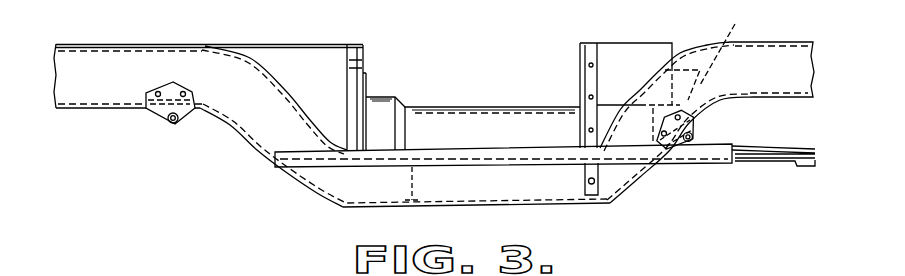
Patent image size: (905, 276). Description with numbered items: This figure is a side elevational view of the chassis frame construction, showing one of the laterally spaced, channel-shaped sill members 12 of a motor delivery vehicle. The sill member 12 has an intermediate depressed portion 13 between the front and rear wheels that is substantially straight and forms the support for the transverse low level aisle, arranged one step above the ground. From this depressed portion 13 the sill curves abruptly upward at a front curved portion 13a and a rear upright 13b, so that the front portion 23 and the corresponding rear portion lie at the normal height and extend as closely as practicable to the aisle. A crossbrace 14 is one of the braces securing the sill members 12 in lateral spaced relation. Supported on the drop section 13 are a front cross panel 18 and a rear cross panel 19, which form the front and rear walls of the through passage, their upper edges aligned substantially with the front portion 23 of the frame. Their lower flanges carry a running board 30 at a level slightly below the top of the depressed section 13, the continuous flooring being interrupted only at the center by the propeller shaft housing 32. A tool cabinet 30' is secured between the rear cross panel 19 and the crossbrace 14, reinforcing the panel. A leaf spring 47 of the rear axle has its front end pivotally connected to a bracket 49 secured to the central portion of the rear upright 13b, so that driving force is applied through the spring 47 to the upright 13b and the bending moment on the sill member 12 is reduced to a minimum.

The sill member 12 is at (760, 42).
The depressed portion 13 is at (563, 196).
The front curved portion 13a is at (255, 98).
The rear upright 13b is at (640, 125).
The crossbrace 14 is at (701, 74).
The front cross panel 18 is at (365, 62).
The rear cross panel 19 is at (580, 60).
The front portion 23 is at (105, 46).
The running board 30 is at (503, 174).
The tool cabinet 30' is at (648, 58).
The propeller shaft housing 32 is at (480, 108).
The leaf spring 47 is at (766, 146).
The bracket 49 is at (694, 128).